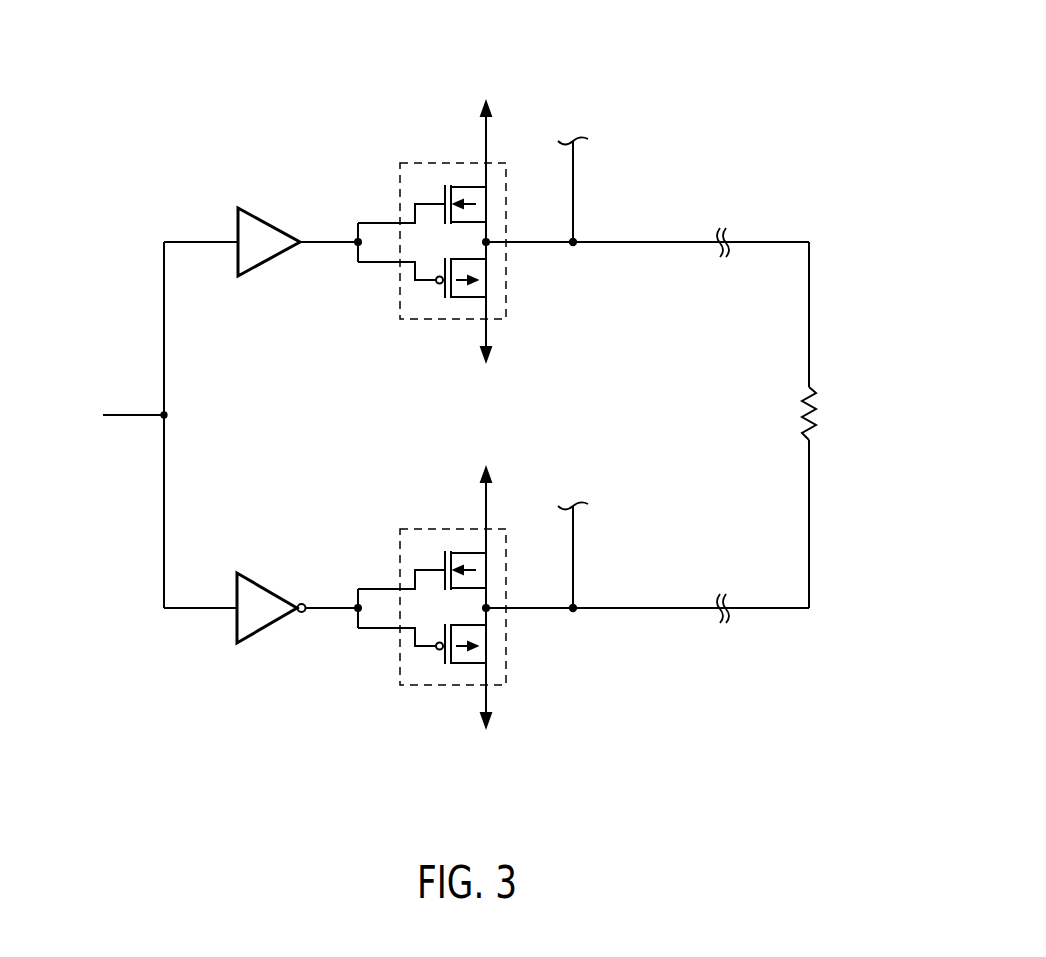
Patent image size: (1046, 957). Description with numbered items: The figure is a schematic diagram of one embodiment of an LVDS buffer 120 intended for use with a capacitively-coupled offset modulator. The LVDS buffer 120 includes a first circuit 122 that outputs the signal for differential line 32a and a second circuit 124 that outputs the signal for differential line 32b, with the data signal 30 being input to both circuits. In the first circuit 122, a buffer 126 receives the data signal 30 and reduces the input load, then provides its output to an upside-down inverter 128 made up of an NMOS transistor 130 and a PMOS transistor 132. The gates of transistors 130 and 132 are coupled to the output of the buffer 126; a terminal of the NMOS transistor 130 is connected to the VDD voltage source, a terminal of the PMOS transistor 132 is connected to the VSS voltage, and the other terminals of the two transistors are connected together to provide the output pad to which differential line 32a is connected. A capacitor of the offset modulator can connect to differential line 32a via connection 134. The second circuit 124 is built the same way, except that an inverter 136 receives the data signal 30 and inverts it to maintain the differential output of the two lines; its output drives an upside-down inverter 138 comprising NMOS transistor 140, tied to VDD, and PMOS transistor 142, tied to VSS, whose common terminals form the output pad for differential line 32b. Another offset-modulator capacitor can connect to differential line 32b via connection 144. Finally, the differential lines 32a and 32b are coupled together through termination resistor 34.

The LVDS buffer embodiment 120 is at (722, 82).
The first circuit 122 is at (285, 145).
The second circuit 124 is at (318, 720).
The buffer 126 is at (240, 220).
The upside-down inverter 128 is at (397, 190).
The NMOS transistor 130 is at (451, 165).
The PMOS transistor 132 is at (447, 312).
The connection 134 is at (575, 162).
The inverter 136 is at (240, 623).
The upside-down inverter 138 is at (397, 555).
The NMOS transistor 140 is at (451, 525).
The PMOS transistor 142 is at (439, 680).
The connection 144 is at (575, 530).
The data signal 30 is at (128, 413).
The differential line 32a is at (648, 240).
The differential line 32b is at (645, 605).
The termination resistor 34 is at (815, 392).